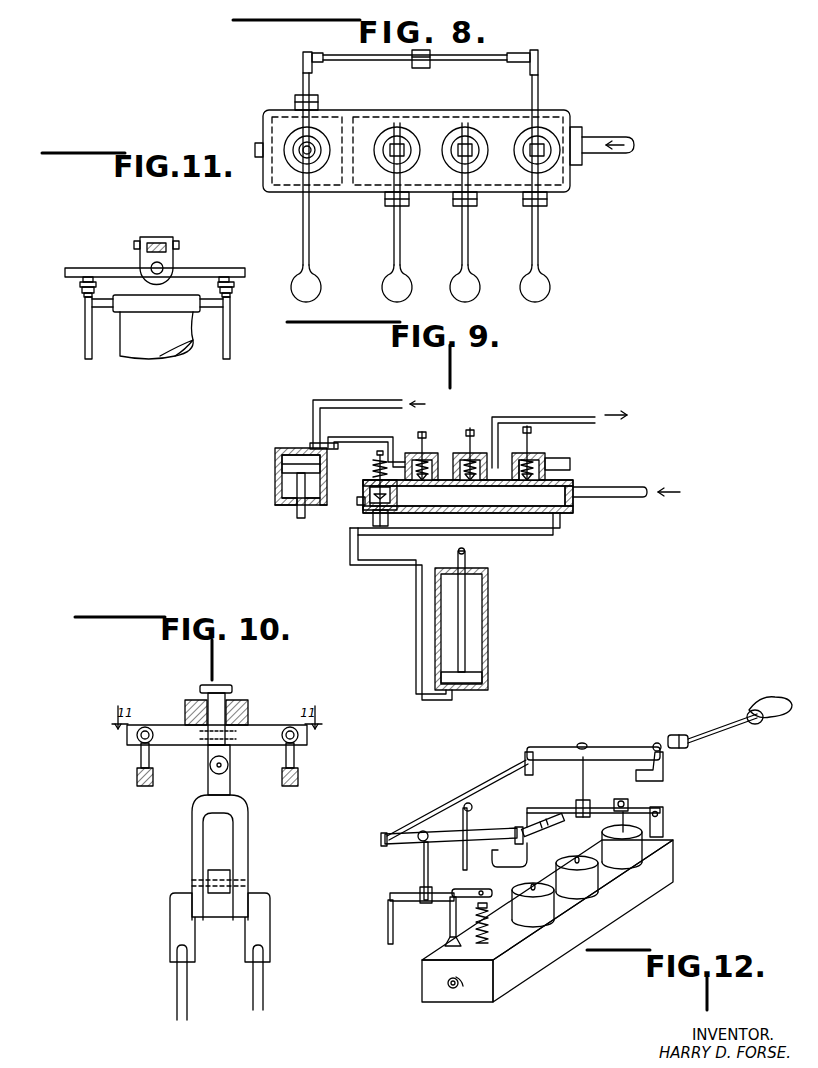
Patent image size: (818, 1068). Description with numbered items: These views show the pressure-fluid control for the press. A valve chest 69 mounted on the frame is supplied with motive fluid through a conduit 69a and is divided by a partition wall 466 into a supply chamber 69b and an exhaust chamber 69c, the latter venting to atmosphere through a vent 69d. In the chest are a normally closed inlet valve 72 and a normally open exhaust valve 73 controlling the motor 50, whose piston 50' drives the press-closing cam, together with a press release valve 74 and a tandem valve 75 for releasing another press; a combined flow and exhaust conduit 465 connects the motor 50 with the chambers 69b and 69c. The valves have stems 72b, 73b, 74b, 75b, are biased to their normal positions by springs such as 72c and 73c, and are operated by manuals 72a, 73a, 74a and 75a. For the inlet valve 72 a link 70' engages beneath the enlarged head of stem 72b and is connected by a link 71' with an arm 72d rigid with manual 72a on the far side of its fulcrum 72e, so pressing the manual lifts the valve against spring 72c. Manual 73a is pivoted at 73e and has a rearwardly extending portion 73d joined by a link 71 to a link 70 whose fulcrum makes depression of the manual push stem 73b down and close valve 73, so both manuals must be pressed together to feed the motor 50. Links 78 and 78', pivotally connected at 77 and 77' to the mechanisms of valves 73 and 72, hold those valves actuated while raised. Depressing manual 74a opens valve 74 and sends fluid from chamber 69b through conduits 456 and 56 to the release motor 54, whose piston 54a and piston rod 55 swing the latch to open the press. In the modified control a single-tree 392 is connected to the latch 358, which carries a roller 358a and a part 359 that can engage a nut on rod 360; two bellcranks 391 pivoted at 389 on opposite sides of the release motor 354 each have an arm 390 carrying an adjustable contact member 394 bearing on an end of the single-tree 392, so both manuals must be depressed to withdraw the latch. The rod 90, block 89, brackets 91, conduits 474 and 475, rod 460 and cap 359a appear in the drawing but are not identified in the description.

In FIG. 8, the valve chest 69 is at (428, 120).
In FIG. 9, the valve chest 69 is at (576, 481).
In FIG. 12, the valve chest 69 is at (630, 896).
In FIG. 8, the conduit 69a is at (610, 135).
In FIG. 9, the supply chamber 69b is at (467, 496).
In FIG. 9, the exhaust chamber 69c is at (357, 502).
In FIG. 9, the vent 69d is at (372, 522).
In FIG. 12, the vent 69d is at (455, 990).
In FIG. 8, the connecting rod 90 is at (366, 61).
In FIG. 12, the connecting rod 90 is at (490, 783).
In FIG. 8, the pivot block 89 is at (421, 68).
In FIG. 12, the pivot block 89 is at (472, 807).
In FIG. 8, the bracket 91 is at (302, 61).
In FIG. 12, the bracket 91 is at (382, 842).
In FIG. 8, the manual 73a is at (304, 200).
In FIG. 12, the manual 73a is at (577, 856).
In FIG. 8, the manual 74a is at (393, 229).
In FIG. 8, the manual 75a is at (465, 231).
In FIG. 8, the manual 72a is at (540, 229).
In FIG. 12, the manual 72a is at (710, 723).
In FIG. 11, the single-tree arrangement 392 is at (122, 268).
In FIG. 10, the single-tree arrangement 392 is at (262, 730).
In FIG. 11, the latch 358 is at (157, 237).
In FIG. 10, the latch 358 is at (224, 799).
In FIG. 11, the adjustable contact member 394 is at (88, 277).
In FIG. 10, the adjustable contact member 394 is at (136, 735).
In FIG. 11, the arm 390 is at (80, 291).
In FIG. 10, the arm 390 is at (138, 756).
In FIG. 11, the pivot 389 is at (82, 306).
In FIG. 11, the bellcrank 391 is at (84, 355).
In FIG. 10, the bellcrank 391 is at (145, 788).
In FIG. 11, the motor 354 is at (157, 327).
In FIG. 10, the motor 354 is at (185, 701).
In FIG. 9, the conduit 456 is at (330, 435).
In FIG. 9, the pipe 474 is at (367, 400).
In FIG. 9, the pipe 475 is at (582, 410).
In FIG. 9, the conduit 56 is at (311, 444).
In FIG. 9, the motor 54 is at (278, 478).
In FIG. 9, the piston 54a is at (283, 465).
In FIG. 9, the piston rod 55 is at (296, 515).
In FIG. 9, the exhaust valve 73 is at (363, 487).
In FIG. 9, the valve stem 73b is at (381, 451).
In FIG. 9, the spring 73c is at (378, 463).
In FIG. 12, the spring 73c is at (490, 926).
In FIG. 9, the press release valve 74 is at (440, 452).
In FIG. 9, the valve stem 74b is at (422, 432).
In FIG. 9, the tandem valve 75 is at (481, 452).
In FIG. 9, the valve stem 75b is at (470, 428).
In FIG. 9, the inlet valve 72 is at (546, 462).
In FIG. 9, the valve stem 72b is at (528, 426).
In FIG. 12, the valve stem 72b is at (630, 802).
In FIG. 9, the spring 72c is at (518, 456).
In FIG. 9, the partition wall 466 is at (414, 512).
In FIG. 9, the combined flow and exhaust conduit 465 is at (372, 568).
In FIG. 9, the motor 50 is at (479, 619).
In FIG. 9, the piston 50' is at (483, 667).
In FIG. 9, the rod 460 is at (606, 498).
In FIG. 10, the cap 359a is at (232, 690).
In FIG. 10, the roller 358a is at (222, 872).
In FIG. 10, the part 359 is at (172, 922).
In FIG. 10, the rod 360 is at (188, 990).
In FIG. 12, the arm 72d is at (556, 747).
In FIG. 12, the fulcrum 72e is at (656, 743).
In FIG. 12, the link 71 is at (412, 872).
In FIG. 12, the link 71' is at (568, 787).
In FIG. 12, the pivot 77 is at (406, 892).
In FIG. 12, the pivot 77' is at (543, 805).
In FIG. 12, the link 78 is at (373, 922).
In FIG. 12, the link 78' is at (517, 813).
In FIG. 12, the link 70 is at (436, 921).
In FIG. 12, the link 70' is at (597, 795).
In FIG. 12, the rearwardly extending portion 73d is at (405, 834).
In FIG. 12, the pivot 73e is at (472, 890).